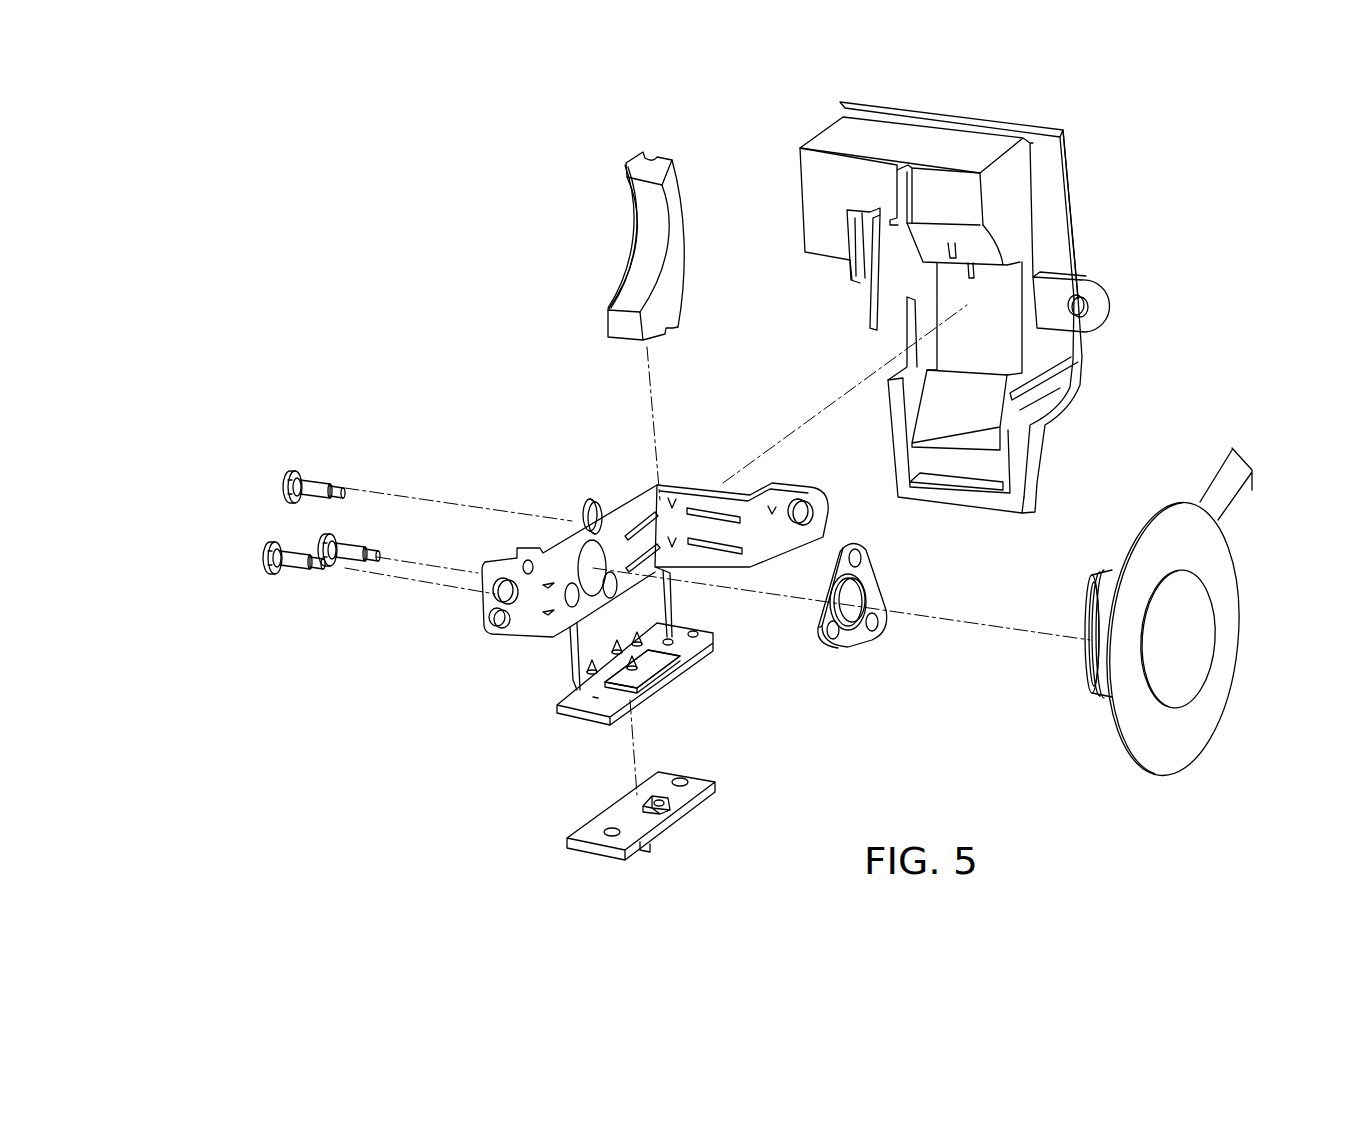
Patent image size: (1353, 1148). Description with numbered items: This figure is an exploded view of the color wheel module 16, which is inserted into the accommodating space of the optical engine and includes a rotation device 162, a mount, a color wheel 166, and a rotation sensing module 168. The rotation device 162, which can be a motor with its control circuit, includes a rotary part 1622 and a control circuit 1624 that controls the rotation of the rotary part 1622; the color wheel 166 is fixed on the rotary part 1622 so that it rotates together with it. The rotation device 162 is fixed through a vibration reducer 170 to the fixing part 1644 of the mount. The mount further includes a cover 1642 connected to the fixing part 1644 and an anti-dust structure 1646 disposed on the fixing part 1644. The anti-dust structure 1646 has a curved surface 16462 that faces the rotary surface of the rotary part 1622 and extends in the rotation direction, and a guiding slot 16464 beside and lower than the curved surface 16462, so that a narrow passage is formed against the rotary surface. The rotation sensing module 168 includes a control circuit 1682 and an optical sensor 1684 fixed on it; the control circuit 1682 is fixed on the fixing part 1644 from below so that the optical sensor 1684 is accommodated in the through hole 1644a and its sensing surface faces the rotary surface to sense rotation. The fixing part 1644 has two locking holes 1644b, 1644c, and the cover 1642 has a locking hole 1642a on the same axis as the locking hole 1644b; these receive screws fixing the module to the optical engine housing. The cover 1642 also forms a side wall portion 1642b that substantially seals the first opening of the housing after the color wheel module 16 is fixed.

The color wheel module 16 is at (298, 180).
The rotation device 162 is at (1104, 562).
The rotary part 1622 is at (1098, 660).
The control circuit 1624 is at (1215, 493).
The color wheel 166 is at (1192, 730).
The cover 1642 is at (1023, 213).
The locking hole 1642a is at (1090, 311).
The side wall portion 1642b is at (1057, 172).
The fixing part 1644 is at (621, 510).
The through hole 1644a is at (647, 672).
The locking hole 1644b is at (809, 513).
The locking hole 1644c is at (497, 593).
The anti-dust structure 1646 is at (614, 322).
The curved surface 16462 is at (660, 241).
The guiding slot 16464 is at (636, 252).
The rotation sensing module 168 is at (700, 772).
The control circuit 1682 is at (660, 825).
The optical sensor 1684 is at (673, 800).
The vibration reducer 170 is at (309, 592).